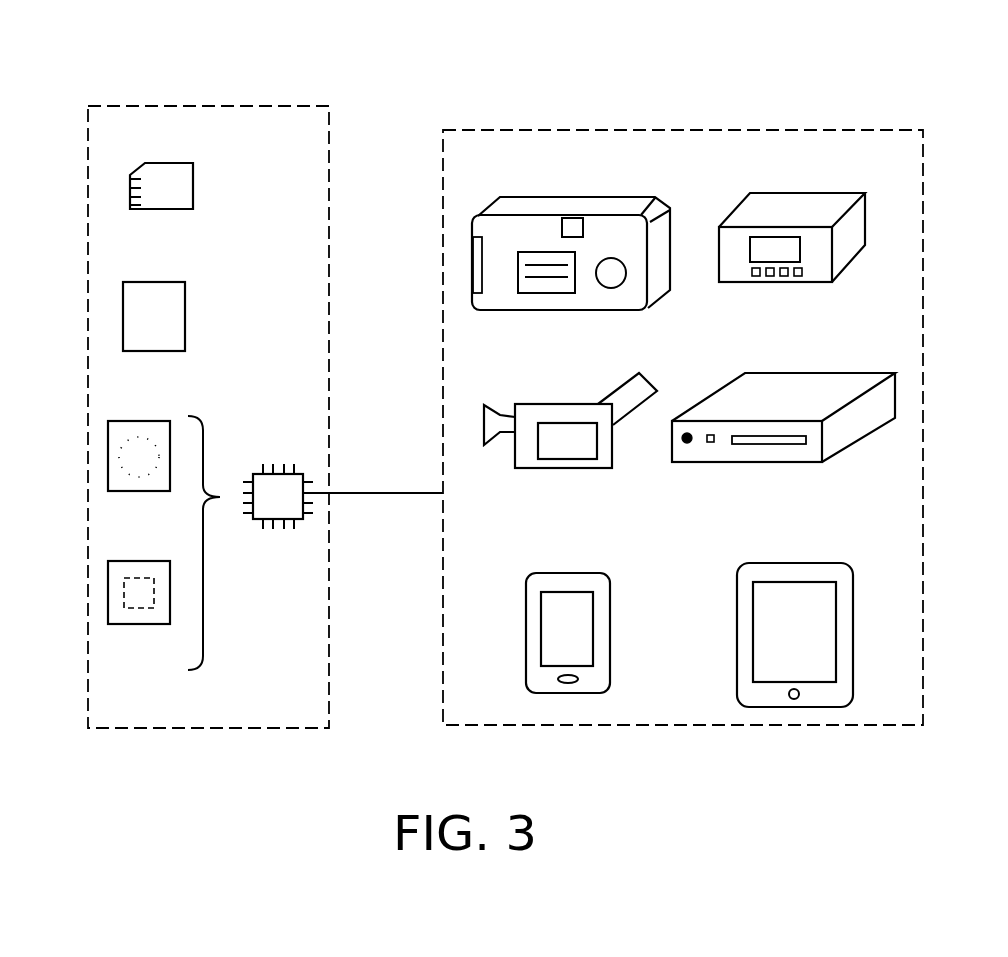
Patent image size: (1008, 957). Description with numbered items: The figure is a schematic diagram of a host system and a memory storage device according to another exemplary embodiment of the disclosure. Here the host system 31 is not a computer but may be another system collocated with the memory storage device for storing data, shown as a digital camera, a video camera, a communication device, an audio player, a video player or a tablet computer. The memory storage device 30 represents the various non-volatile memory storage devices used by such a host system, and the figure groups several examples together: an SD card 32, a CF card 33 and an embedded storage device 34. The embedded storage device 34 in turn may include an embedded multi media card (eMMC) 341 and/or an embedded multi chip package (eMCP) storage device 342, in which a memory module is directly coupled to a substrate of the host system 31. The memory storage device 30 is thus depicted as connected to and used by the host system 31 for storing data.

The memory storage device 30 is at (199, 105).
The host system 31 is at (606, 129).
The SD card 32 is at (130, 193).
The CF card 33 is at (123, 319).
The embedded storage device 34 is at (277, 464).
The embedded multi media card (eMMC) 341 is at (108, 458).
The embedded multi chip package (eMCP) storage device 342 is at (108, 595).